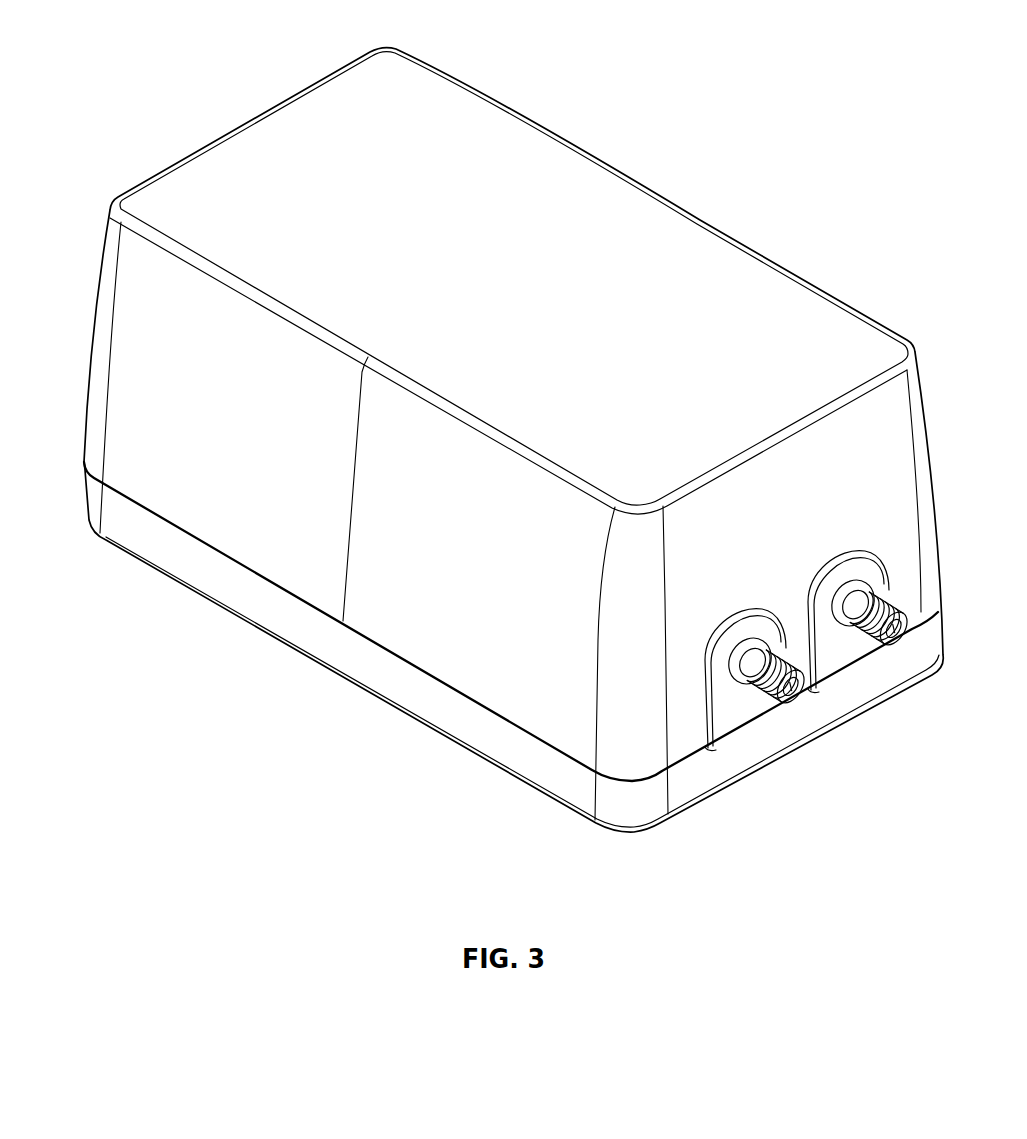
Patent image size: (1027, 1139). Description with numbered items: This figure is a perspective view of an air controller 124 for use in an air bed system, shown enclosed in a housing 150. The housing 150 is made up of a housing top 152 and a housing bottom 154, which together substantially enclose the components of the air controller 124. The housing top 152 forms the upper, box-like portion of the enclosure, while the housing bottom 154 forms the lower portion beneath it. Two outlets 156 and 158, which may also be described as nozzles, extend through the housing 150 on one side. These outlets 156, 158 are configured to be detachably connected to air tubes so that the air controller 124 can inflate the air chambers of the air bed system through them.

The air controller 124 is at (483, 417).
The housing 150 is at (174, 156).
The housing top 152 is at (146, 343).
The housing bottom 154 is at (172, 546).
The outlet 156 is at (793, 690).
The outlet 158 is at (897, 633).